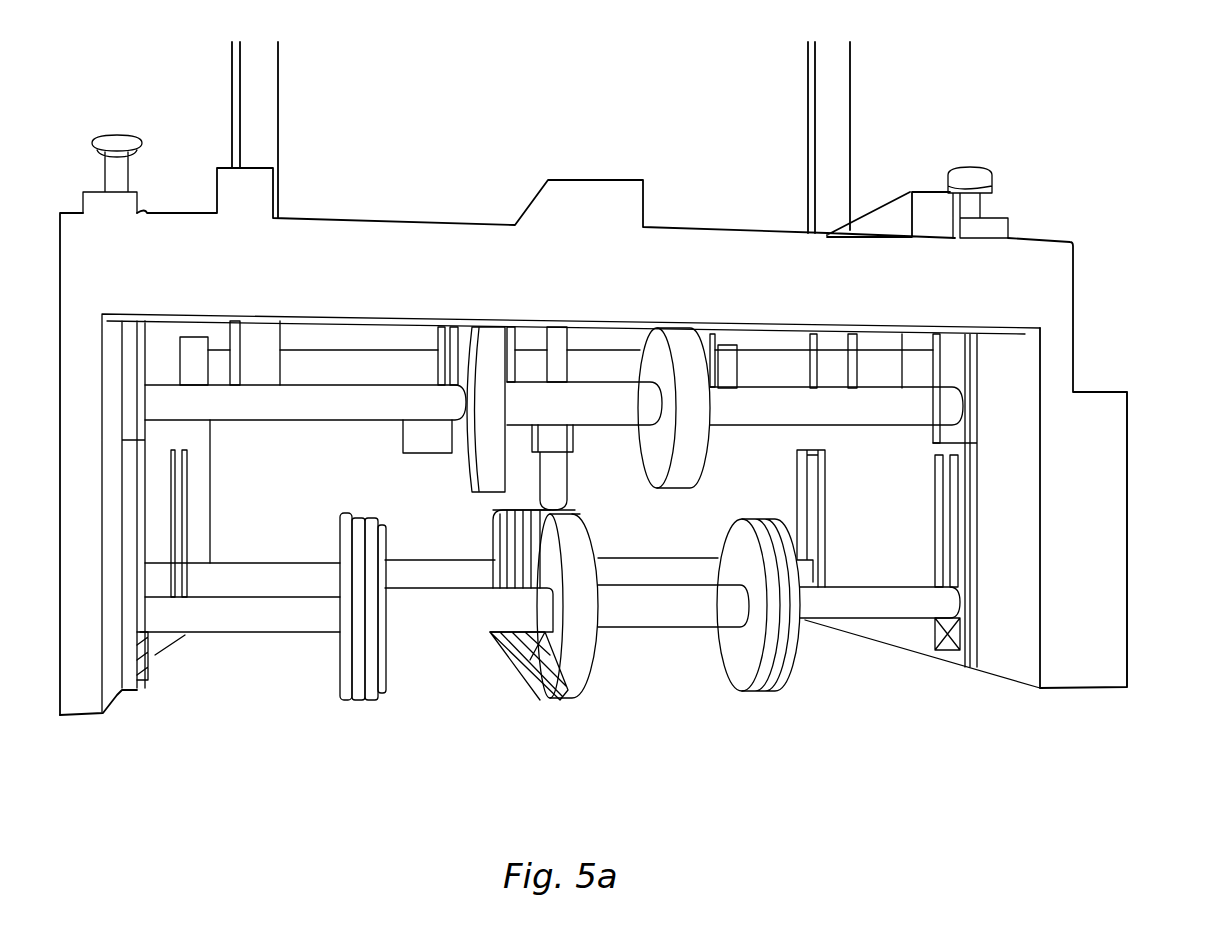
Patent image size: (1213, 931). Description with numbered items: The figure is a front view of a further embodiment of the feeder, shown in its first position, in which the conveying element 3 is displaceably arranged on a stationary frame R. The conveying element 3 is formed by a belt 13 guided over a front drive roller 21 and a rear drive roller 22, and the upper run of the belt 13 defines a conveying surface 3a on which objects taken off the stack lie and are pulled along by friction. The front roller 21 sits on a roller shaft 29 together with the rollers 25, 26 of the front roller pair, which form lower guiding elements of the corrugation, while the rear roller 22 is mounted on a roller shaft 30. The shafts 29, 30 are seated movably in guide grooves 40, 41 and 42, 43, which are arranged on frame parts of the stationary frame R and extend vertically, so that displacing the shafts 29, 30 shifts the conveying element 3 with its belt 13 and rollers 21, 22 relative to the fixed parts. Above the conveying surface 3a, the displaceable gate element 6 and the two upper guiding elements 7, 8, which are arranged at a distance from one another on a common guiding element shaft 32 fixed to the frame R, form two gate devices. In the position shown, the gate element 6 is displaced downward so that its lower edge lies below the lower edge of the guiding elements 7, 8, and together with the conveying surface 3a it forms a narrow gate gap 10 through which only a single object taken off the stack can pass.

The conveying element 3 is at (603, 706).
The conveying surface 3a is at (530, 518).
The gate element 6 is at (568, 486).
The upper guiding element 7 is at (706, 428).
The upper guiding element 8 is at (497, 428).
The gate gap 10 is at (577, 513).
The belt 13 is at (585, 672).
The front drive roller 21 is at (525, 690).
The rear drive roller 22 is at (492, 545).
The roller 25 is at (376, 698).
The roller 26 is at (753, 692).
The roller shaft 29 is at (920, 637).
The roller shaft 30 is at (258, 578).
The guiding element shaft 32 is at (554, 403).
The guide groove 40 is at (935, 650).
The guide groove 41 is at (150, 665).
The guide groove 42 is at (810, 497).
The guide groove 43 is at (188, 472).
The stationary frame R is at (1107, 562).